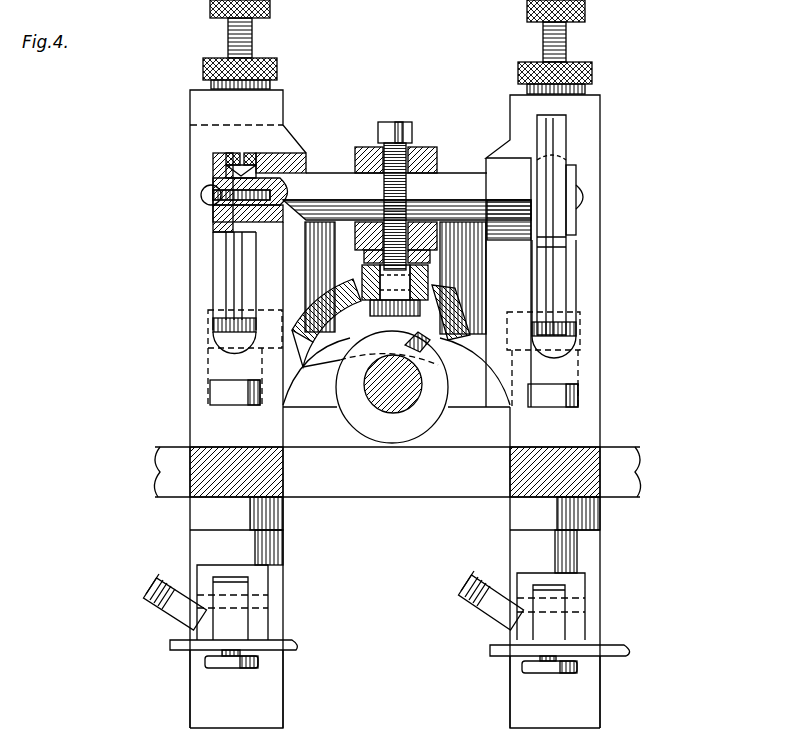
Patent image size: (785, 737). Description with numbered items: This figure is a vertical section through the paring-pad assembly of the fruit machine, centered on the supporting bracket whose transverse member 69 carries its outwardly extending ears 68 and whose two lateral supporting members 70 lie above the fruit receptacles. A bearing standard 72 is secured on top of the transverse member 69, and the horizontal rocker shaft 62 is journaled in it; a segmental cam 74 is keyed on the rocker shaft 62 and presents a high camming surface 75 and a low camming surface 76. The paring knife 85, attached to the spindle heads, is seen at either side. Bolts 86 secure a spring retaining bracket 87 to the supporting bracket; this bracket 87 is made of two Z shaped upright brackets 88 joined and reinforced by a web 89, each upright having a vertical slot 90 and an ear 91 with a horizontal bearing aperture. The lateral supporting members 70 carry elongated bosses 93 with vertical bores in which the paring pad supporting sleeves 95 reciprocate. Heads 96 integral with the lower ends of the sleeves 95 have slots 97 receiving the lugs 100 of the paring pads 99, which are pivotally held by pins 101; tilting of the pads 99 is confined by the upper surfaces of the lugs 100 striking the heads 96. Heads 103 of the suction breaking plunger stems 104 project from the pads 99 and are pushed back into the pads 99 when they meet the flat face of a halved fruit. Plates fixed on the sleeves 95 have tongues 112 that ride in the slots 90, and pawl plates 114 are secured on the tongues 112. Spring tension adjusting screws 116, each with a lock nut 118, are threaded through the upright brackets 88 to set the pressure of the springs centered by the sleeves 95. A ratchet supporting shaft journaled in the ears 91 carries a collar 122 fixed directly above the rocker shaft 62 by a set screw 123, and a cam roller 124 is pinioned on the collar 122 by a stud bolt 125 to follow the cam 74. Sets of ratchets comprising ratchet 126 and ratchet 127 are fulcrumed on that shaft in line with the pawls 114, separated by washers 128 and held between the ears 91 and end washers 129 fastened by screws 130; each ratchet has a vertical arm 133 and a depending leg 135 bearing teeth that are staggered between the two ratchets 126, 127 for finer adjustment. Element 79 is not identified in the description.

The rocker shaft 62 is at (372, 408).
The ears 68 is at (170, 462).
The transverse member 69 is at (399, 492).
The lateral supporting members 70 is at (192, 497).
The bearing standard 72 is at (452, 440).
The segmental cam 74 is at (378, 430).
The high camming surface 75 is at (307, 350).
The low camming surface 76 is at (358, 290).
The lower housing 79 is at (515, 715).
The paring knife 85 is at (148, 598).
The bolts 86 is at (215, 393).
The spring retaining bracket 87 is at (190, 88).
The Z shaped upright brackets 88 is at (203, 135).
The web 89 is at (448, 332).
The vertical slots 90 is at (222, 365).
The ears 91 is at (492, 162).
The elongated bosses 93 is at (200, 520).
The paring pad supporting sleeves 95 is at (215, 552).
The heads 96 is at (262, 578).
The slots 97 is at (248, 617).
The paring pads 99 is at (294, 650).
The lugs 100 is at (230, 626).
The pins 101 is at (270, 596).
The heads 103 is at (243, 668).
The suction breaking plunger stems 104 is at (543, 657).
The tongues 112 is at (225, 338).
The pawl plates 114 is at (208, 314).
The spring tension adjusting screws 116 is at (253, 36).
The lock nut 118 is at (278, 70).
The collar 122 is at (433, 150).
The set screw 123 is at (390, 122).
The cam roller 124 is at (432, 283).
The stud bolt 125 is at (420, 292).
The ratchet 126 is at (223, 283).
The ratchet 127 is at (235, 298).
The washers 128 is at (213, 228).
The washers 129 is at (215, 160).
The screws 130 is at (207, 190).
The vertical arms 133 is at (561, 127).
The depending legs 135 is at (245, 268).